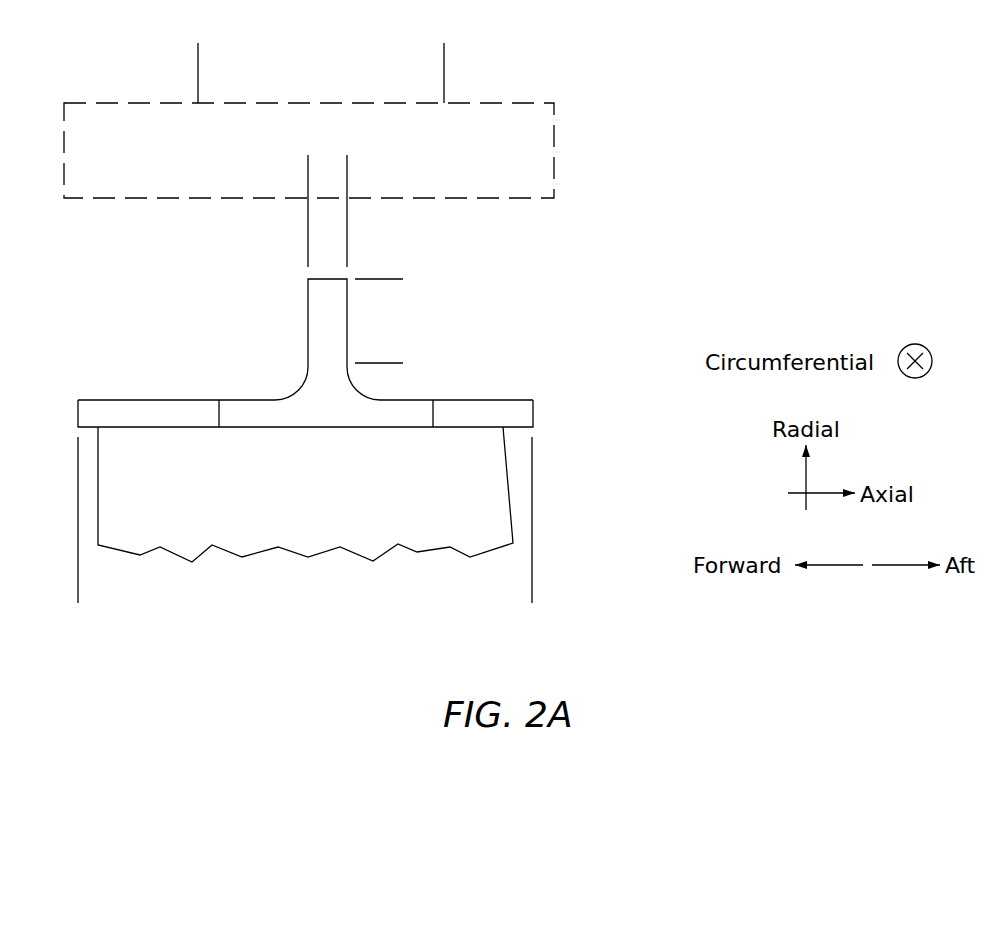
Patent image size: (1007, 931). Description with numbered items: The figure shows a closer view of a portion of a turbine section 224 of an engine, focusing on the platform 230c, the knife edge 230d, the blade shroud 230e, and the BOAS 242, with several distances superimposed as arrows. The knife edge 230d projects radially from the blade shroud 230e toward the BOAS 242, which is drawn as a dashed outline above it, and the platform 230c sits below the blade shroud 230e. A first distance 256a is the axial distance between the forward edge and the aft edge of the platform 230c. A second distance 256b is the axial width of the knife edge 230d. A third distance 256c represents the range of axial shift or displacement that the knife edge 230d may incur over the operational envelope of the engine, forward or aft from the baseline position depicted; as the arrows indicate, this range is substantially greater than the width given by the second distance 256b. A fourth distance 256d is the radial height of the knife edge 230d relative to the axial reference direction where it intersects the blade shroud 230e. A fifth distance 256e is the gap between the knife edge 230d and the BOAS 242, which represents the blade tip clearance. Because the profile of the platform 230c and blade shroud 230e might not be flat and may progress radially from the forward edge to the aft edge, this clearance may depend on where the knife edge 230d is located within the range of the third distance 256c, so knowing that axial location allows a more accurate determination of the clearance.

The turbine section 224 is at (788, 140).
The BOAS 242 is at (554, 148).
The platform 230c is at (175, 417).
The knife edge 230d is at (332, 323).
The blade shroud 230e is at (320, 412).
The first distance 256a is at (532, 592).
The second distance 256b is at (392, 164).
The third distance 256c is at (444, 52).
The fourth distance 256d is at (393, 363).
The fifth distance 256e is at (358, 211).